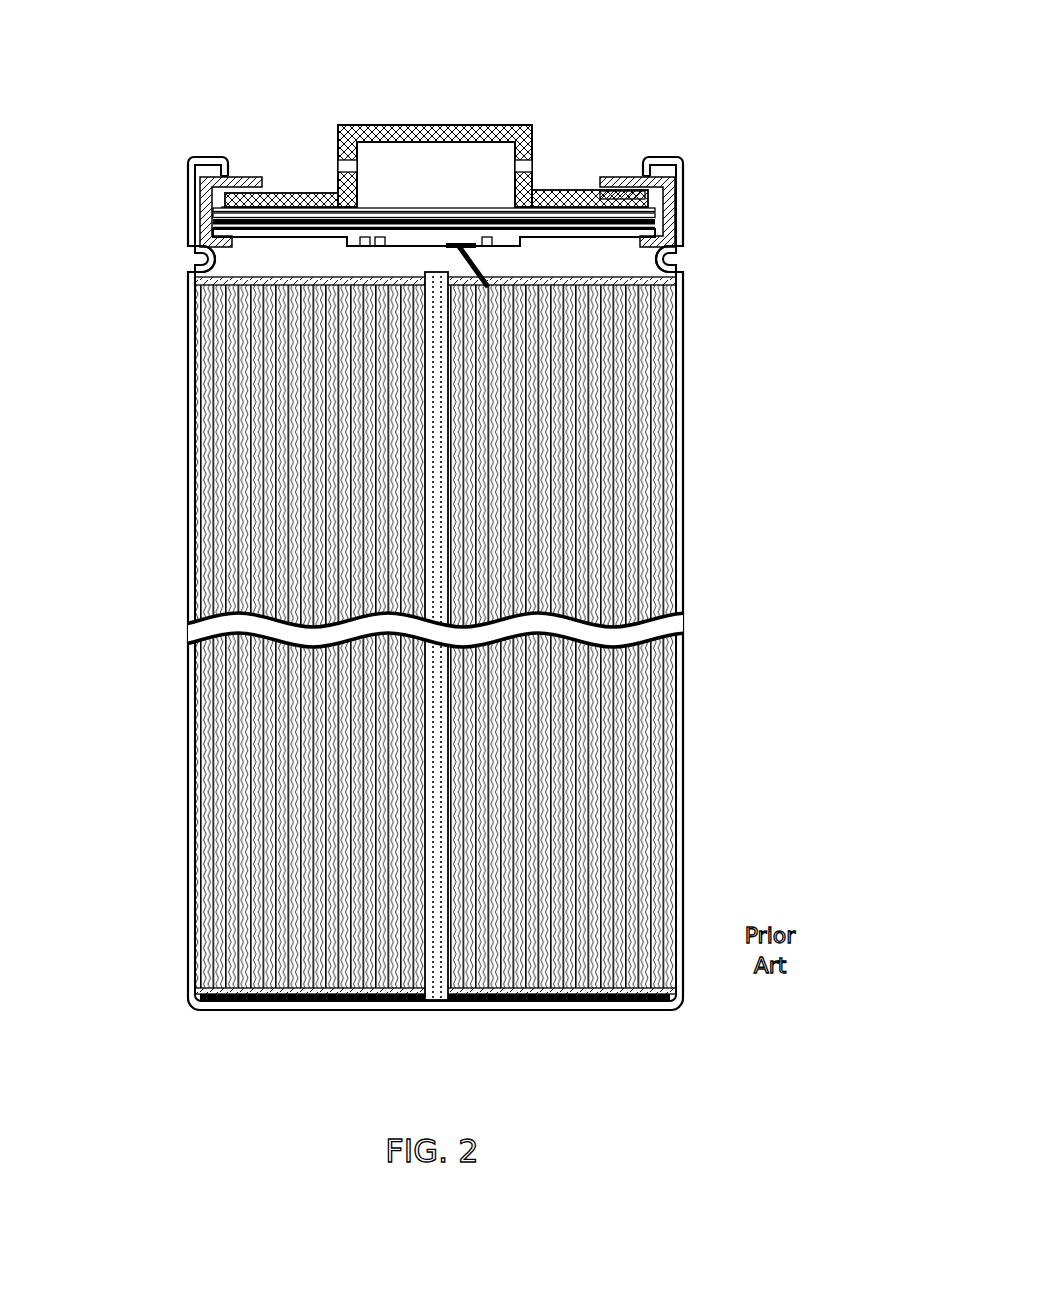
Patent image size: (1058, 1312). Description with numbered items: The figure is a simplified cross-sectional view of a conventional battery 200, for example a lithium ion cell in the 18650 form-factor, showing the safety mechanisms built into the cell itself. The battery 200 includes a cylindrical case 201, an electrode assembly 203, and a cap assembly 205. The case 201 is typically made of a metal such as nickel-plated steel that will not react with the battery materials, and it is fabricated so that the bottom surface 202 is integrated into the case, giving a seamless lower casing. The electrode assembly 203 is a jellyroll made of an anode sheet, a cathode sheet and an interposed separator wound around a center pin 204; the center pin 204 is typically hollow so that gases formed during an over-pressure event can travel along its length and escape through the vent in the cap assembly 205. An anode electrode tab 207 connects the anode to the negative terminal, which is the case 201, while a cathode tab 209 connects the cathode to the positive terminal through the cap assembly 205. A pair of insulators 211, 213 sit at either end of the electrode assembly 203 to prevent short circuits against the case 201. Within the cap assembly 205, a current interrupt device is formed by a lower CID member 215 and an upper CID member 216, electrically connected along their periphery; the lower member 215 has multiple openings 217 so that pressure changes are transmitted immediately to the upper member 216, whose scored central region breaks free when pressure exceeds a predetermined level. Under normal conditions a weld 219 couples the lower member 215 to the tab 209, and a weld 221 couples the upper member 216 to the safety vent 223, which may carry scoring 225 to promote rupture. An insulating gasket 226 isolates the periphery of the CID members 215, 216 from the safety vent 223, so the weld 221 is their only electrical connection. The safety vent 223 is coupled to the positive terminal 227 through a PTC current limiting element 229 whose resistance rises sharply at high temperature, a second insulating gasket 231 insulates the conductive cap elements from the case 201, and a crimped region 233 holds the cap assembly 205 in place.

The battery 200 is at (506, 551).
The cylindrical case 201 is at (462, 620).
The bottom surface 202 is at (313, 1022).
The electrode assembly 203 is at (546, 474).
The center pin 204 is at (447, 400).
The cap assembly 205 is at (436, 153).
The anode electrode tab 207 is at (668, 1000).
The cathode tab 209 is at (483, 265).
The insulator 211 is at (620, 998).
The insulator 213 is at (228, 290).
The lower CID member 215 is at (563, 230).
The upper CID member 216 is at (502, 228).
The openings 217 is at (377, 220).
The weld 219 is at (455, 246).
The weld 221 is at (443, 212).
The safety vent 223 is at (500, 213).
The scoring 225 is at (472, 206).
The insulating gasket 226 is at (212, 227).
The positive terminal 227 is at (398, 125).
The positive temperature coefficient current limiting element 229 is at (615, 204).
The second insulating gasket 231 is at (215, 200).
The crimped region 233 is at (693, 263).